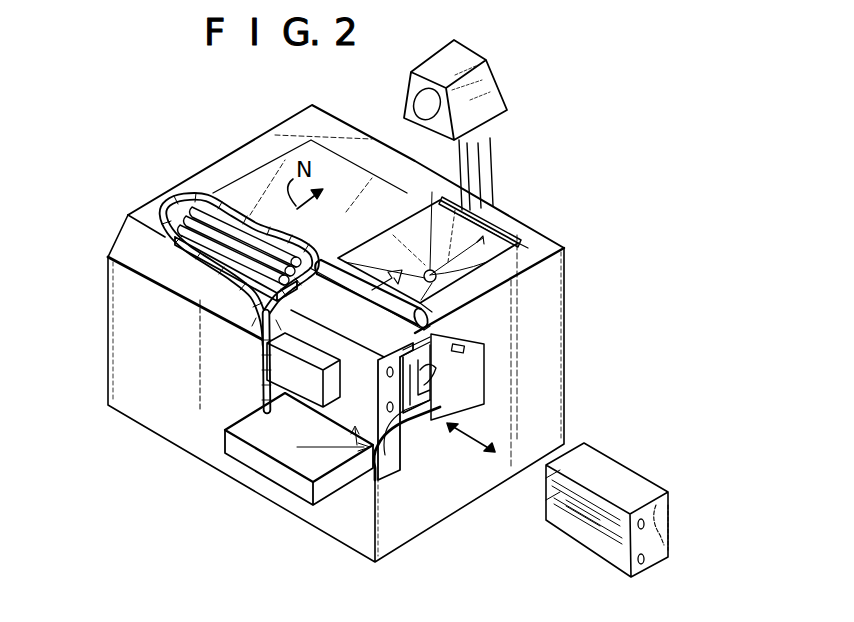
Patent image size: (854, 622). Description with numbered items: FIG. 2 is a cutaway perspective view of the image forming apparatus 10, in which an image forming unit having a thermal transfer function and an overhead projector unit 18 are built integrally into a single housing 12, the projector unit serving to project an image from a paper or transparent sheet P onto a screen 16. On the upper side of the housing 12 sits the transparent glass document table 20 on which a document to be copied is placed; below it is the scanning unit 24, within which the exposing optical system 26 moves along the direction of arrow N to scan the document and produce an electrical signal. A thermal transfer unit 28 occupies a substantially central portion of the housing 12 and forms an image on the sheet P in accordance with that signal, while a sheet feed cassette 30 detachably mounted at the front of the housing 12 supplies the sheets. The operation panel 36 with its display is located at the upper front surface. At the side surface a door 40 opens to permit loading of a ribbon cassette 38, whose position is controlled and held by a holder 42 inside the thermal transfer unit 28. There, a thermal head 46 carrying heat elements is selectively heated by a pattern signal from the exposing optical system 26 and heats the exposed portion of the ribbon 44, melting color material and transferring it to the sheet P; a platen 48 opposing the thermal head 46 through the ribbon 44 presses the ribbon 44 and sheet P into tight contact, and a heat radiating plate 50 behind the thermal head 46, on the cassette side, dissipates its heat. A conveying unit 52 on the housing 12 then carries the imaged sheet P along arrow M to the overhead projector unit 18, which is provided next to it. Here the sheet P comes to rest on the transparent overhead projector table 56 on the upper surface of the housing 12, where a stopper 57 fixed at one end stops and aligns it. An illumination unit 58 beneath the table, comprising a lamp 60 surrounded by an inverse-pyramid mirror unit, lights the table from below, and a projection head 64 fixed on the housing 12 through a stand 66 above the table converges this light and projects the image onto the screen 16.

The image forming apparatus 10 is at (144, 120).
The housing 12 is at (554, 324).
The screen 16 is at (88, 266).
The overhead projector unit 18 is at (572, 176).
The document table 20 is at (255, 182).
The scanning unit 24 is at (234, 284).
The exposing optical system 26 is at (177, 251).
The thermal transfer unit 28 is at (371, 474).
The sheet feed cassette 30 is at (282, 480).
The operation panel 36 is at (182, 288).
The ribbon cassette 38 is at (398, 418).
The door 40 is at (474, 390).
The holder 42 is at (293, 343).
The ribbon 44 is at (665, 517).
The thermal head 46 is at (440, 398).
The platen 48 is at (434, 364).
The heat radiating plate 50 is at (404, 352).
The conveying unit 52 is at (428, 321).
The overhead projector table 56 is at (430, 222).
The stopper 57 is at (545, 240).
The illumination unit 58 is at (485, 236).
The lamp 60 is at (491, 285).
The projection head 64 is at (481, 113).
The stand 66 is at (487, 167).
The sheet P is at (392, 237).